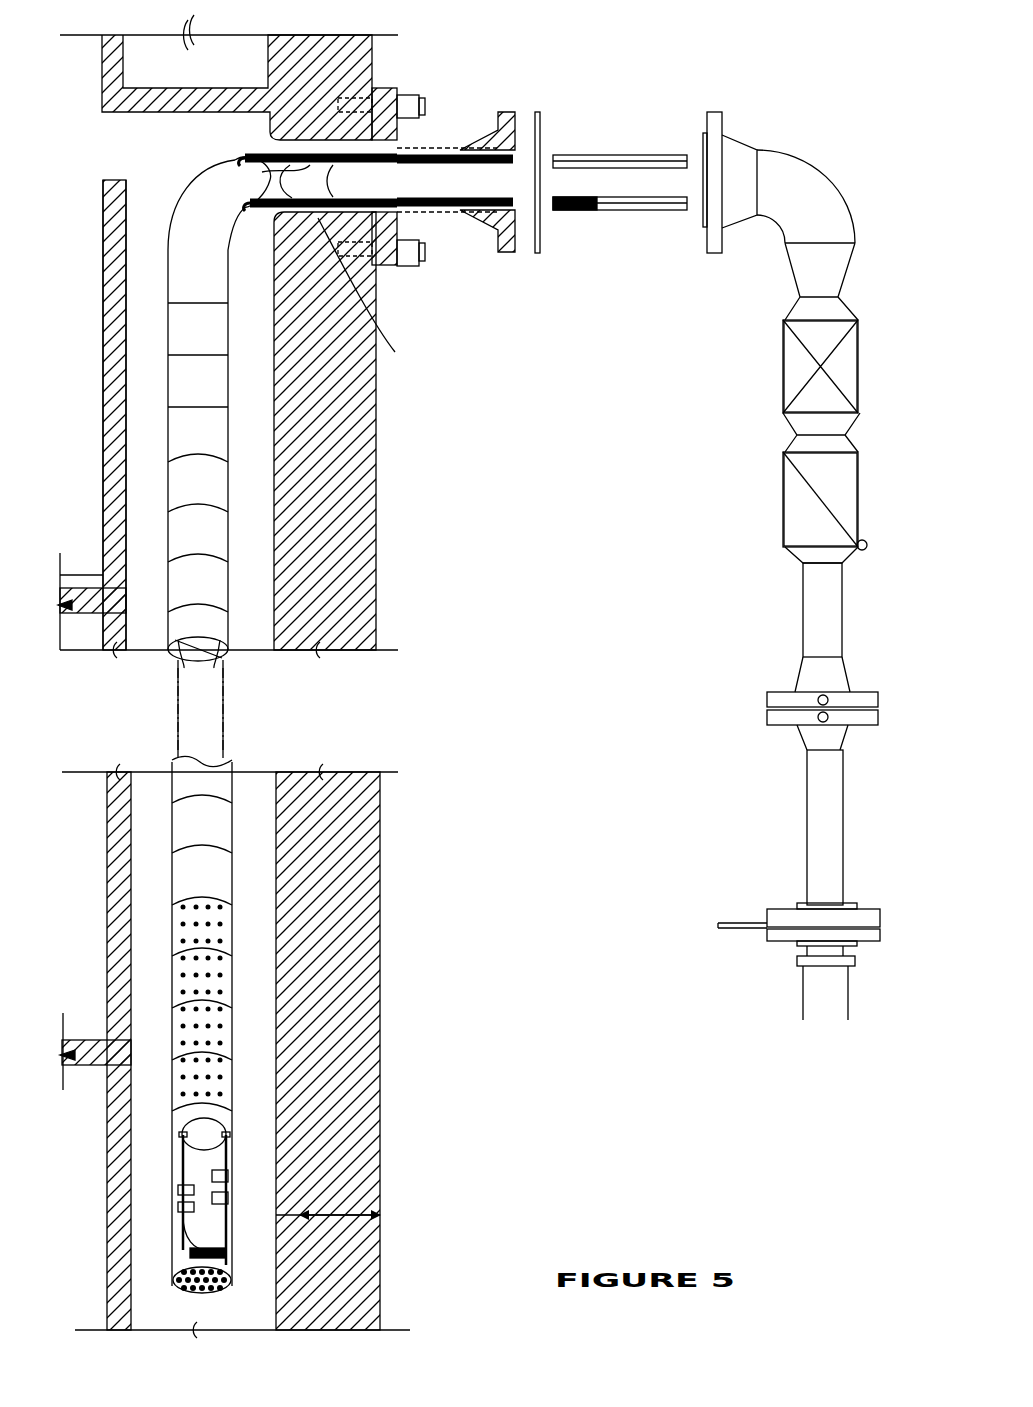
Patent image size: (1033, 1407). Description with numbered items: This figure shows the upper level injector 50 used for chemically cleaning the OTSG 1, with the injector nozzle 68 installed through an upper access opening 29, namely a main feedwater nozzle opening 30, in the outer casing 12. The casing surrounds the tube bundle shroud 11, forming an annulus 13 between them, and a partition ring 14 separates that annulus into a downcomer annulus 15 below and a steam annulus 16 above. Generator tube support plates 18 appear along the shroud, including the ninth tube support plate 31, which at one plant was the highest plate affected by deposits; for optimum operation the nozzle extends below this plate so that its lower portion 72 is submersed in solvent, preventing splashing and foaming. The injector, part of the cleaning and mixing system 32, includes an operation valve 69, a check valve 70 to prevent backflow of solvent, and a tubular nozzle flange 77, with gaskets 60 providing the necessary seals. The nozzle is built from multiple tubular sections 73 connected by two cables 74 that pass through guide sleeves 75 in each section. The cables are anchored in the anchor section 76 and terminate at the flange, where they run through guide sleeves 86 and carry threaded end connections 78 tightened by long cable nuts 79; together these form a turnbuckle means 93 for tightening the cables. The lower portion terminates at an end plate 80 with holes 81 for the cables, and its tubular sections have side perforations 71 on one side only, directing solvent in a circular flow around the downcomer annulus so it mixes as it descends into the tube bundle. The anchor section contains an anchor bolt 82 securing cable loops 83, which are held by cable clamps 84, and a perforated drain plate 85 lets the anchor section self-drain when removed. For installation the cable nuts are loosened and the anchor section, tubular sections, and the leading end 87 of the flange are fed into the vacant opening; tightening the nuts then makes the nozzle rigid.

The OTSG 1 is at (418, 578).
The tube bundle shroud 11 is at (103, 370).
The outer casing 12 is at (378, 433).
The annulus 13 is at (160, 71).
The partition ring 14 is at (248, 88).
The downcomer annulus 15 is at (157, 443).
The steam annulus 16 is at (195, 71).
The generator tube support plates 18 is at (78, 613).
The upper access opening 29 is at (308, 136).
The feedwater nozzle opening 30 is at (395, 355).
The ninth tube support plate 31 is at (80, 588).
The cleaning and mixing system 32 is at (614, 620).
The upper level injector 50 is at (830, 155).
The gaskets 60 is at (373, 90).
The upper level injector nozzle 68 is at (250, 576).
The operation valve 69 is at (783, 373).
The check valve 70 is at (790, 500).
The side perforations 71 is at (222, 960).
The lower portion 72 is at (252, 1050).
The tubular sections 73 is at (180, 218).
The cables 74 is at (178, 724).
The guide sleeves 75 is at (228, 660).
The anchor section 76 is at (233, 1265).
The tubular nozzle flange 77 is at (400, 92).
The threaded end connections 78 is at (410, 148).
The cable nuts 79 is at (612, 160).
The end plate 80 is at (180, 1120).
The holes 81 is at (229, 1127).
The anchor bolt 82 is at (208, 1245).
The cable loops 83 is at (229, 1245).
The cable clamps 84 is at (78, 1235).
The perforated drain plate 85 is at (210, 1293).
The guide sleeves 86 is at (603, 105).
The leading end 87 is at (210, 175).
The turnbuckle means 93 is at (428, 205).